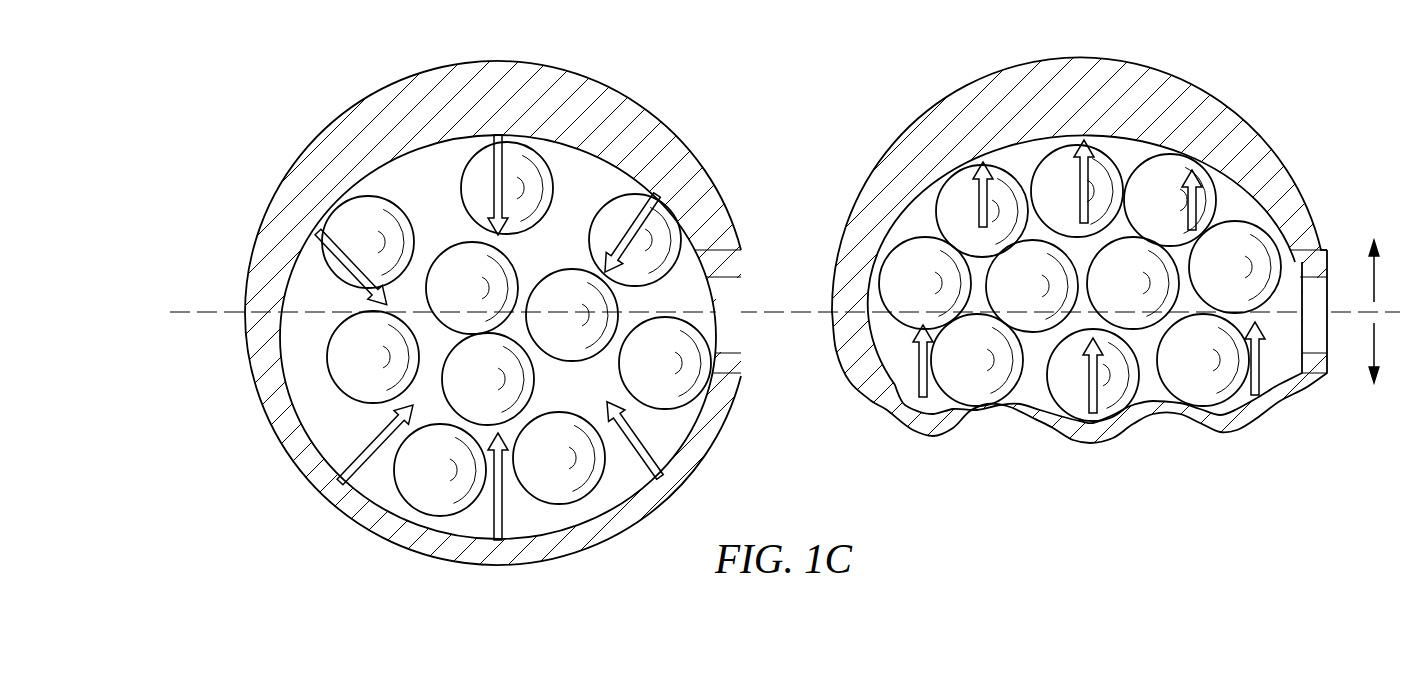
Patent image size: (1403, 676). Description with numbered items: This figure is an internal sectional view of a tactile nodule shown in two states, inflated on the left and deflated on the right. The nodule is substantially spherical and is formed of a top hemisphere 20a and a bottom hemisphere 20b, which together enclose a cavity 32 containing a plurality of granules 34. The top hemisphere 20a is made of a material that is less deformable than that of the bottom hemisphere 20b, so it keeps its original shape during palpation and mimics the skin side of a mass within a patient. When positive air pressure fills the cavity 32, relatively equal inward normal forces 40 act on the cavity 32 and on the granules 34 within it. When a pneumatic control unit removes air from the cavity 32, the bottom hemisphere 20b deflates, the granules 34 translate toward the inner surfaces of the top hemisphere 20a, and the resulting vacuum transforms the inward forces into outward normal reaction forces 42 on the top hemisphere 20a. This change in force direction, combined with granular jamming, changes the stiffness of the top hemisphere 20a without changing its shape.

The top hemisphere 20a is at (326, 131).
The bottom hemisphere 20b is at (378, 532).
The cavity 32 is at (303, 360).
The granules 34 is at (347, 221).
The inward normal forces 40 is at (357, 456).
The outward normal reaction forces 42 is at (893, 353).